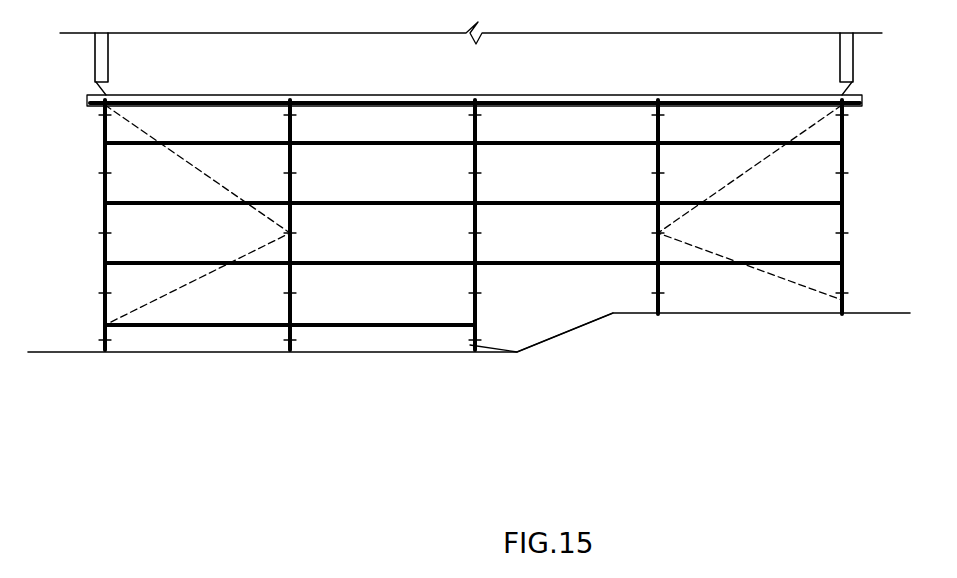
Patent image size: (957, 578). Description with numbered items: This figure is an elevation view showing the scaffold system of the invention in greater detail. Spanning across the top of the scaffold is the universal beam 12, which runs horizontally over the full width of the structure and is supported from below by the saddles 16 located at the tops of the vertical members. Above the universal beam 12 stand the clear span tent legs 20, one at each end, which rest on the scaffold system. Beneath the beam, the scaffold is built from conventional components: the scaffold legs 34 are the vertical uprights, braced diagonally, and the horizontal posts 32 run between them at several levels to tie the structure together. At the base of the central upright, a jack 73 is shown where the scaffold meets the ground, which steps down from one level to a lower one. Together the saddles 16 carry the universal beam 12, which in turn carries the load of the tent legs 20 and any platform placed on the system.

The universal beam 12 is at (207, 94).
The saddle 16 is at (290, 96).
The clear span tent legs 20 is at (95, 68).
The horizontal posts 32 is at (190, 329).
The scaffold legs 34 is at (105, 128).
The jack 73 is at (478, 340).